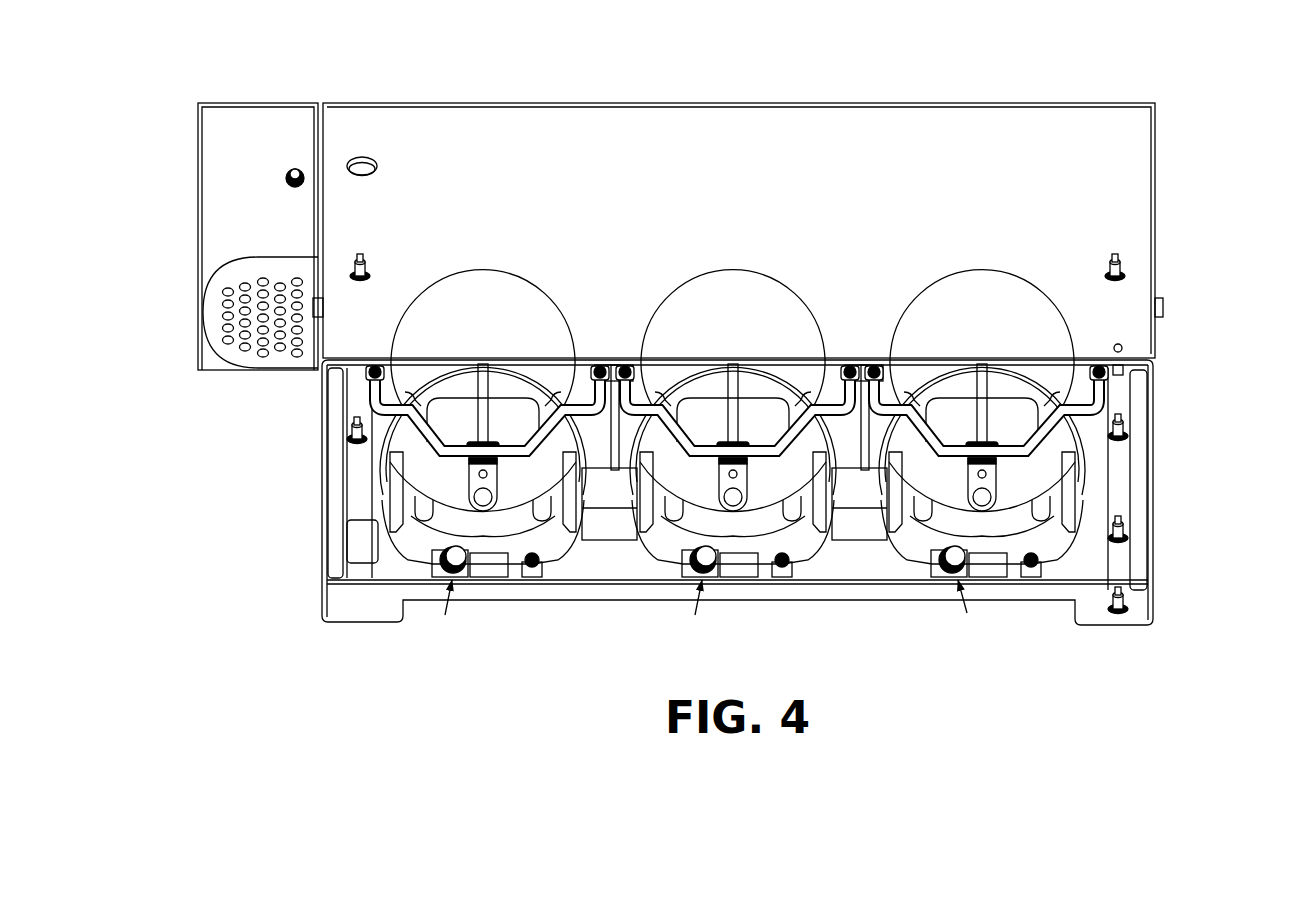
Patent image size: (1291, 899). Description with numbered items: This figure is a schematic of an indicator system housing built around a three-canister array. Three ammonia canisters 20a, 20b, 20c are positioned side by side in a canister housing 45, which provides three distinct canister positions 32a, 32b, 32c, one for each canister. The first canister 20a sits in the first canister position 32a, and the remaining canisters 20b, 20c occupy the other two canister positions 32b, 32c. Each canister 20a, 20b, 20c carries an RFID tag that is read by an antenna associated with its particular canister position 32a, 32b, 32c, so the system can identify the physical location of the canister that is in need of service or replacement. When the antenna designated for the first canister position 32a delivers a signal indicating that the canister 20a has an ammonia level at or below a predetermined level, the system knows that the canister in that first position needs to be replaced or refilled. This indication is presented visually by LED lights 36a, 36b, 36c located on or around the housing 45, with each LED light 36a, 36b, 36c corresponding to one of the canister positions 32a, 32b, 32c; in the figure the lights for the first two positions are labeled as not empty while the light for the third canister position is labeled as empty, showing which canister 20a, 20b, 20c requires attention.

The canister 20a is at (940, 465).
The canister 20b is at (690, 465).
The canister 20c is at (445, 468).
The first canister position 32a is at (1050, 392).
The canister position 32b is at (670, 380).
The canister position 32c is at (372, 452).
The LED light 36a is at (946, 565).
The LED light 36b is at (680, 563).
The LED light 36c is at (443, 560).
The canister housing 45 is at (1100, 217).